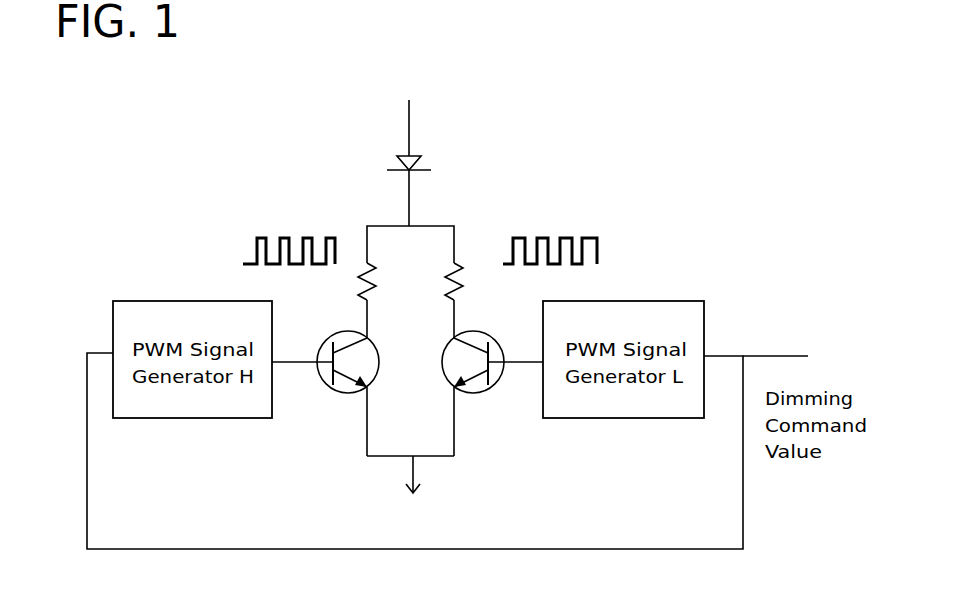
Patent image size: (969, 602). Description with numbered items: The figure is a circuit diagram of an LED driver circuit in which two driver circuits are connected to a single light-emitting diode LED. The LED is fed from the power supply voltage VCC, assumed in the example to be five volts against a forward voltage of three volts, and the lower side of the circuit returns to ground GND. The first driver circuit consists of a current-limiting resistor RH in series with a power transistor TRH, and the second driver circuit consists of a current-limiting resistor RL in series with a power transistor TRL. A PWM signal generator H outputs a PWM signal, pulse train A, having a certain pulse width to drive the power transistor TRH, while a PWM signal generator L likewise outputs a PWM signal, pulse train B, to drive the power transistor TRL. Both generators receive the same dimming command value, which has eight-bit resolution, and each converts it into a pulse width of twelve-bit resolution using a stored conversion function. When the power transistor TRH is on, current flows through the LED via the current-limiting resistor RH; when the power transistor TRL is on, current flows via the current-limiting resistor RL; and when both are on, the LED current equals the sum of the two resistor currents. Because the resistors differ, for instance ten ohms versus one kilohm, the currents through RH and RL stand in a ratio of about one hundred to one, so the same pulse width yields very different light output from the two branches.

The power supply voltage VCC is at (408, 115).
The light-emitting diode LED is at (437, 191).
The current-limiting resistor RH is at (346, 300).
The current-limiting resistor RL is at (476, 300).
The power transistor TRH is at (325, 393).
The power transistor TRL is at (492, 393).
The ground terminal GND is at (410, 493).
The pulse train A is at (240, 251).
The pulse train B is at (606, 252).